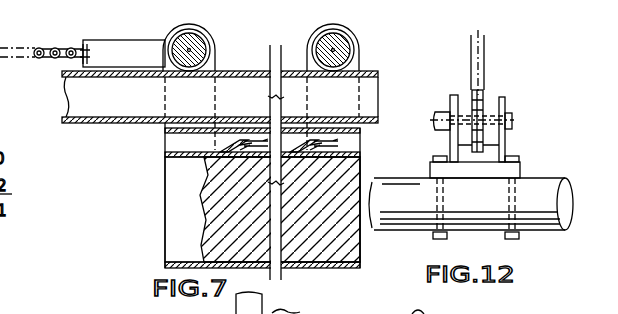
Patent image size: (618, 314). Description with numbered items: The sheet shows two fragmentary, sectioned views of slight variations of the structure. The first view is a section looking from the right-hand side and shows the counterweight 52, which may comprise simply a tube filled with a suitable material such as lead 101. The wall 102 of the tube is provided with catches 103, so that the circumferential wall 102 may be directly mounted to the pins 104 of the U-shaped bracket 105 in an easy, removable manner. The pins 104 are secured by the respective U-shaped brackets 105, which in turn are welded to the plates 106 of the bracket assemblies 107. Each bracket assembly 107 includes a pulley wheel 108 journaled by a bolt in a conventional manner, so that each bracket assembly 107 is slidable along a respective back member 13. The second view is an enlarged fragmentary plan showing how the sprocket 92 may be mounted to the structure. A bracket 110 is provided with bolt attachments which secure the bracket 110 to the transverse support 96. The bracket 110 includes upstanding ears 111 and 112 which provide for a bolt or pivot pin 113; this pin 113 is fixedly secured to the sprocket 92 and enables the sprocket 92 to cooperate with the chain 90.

In FIG. 7, the back member 13 is at (82, 123).
In FIG. 7, the counterweight 52 is at (206, 212).
In FIG. 12, the chain 90 is at (480, 62).
In FIG. 12, the sprocket 92 is at (484, 94).
In FIG. 12, the transverse support 96 is at (548, 182).
In FIG. 7, the lead 101 is at (208, 170).
In FIG. 7, the wall of tube 102 is at (165, 154).
In FIG. 7, the catches 103 is at (235, 150).
In FIG. 7, the pins 104 is at (254, 146).
In FIG. 7, the U-shaped bracket 105 is at (165, 132).
In FIG. 7, the plate 106 is at (212, 68).
In FIG. 7, the bracket assembly 107 is at (258, 42).
In FIG. 7, the pulley wheel 108 is at (344, 44).
In FIG. 12, the bracket 110 is at (556, 152).
In FIG. 12, the upstanding ear 111 is at (452, 96).
In FIG. 12, the upstanding ear 112 is at (504, 100).
In FIG. 12, the bolt or pivot pin 113 is at (510, 118).